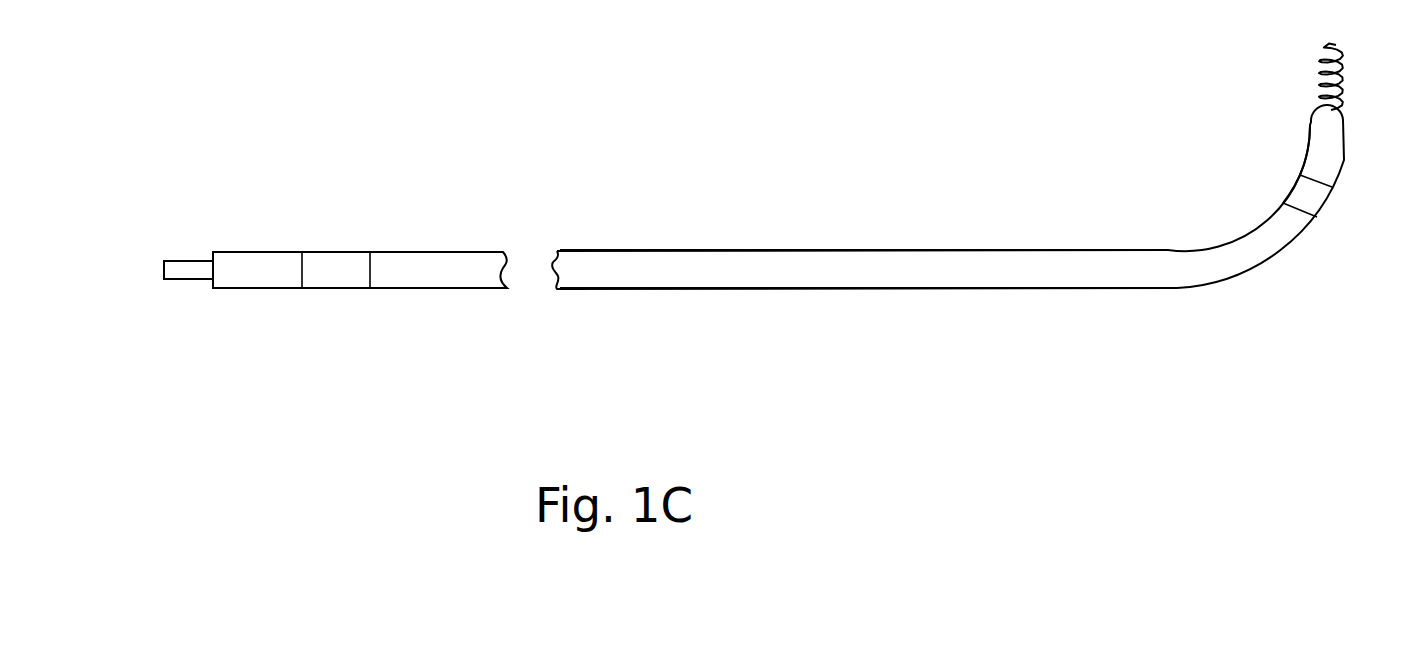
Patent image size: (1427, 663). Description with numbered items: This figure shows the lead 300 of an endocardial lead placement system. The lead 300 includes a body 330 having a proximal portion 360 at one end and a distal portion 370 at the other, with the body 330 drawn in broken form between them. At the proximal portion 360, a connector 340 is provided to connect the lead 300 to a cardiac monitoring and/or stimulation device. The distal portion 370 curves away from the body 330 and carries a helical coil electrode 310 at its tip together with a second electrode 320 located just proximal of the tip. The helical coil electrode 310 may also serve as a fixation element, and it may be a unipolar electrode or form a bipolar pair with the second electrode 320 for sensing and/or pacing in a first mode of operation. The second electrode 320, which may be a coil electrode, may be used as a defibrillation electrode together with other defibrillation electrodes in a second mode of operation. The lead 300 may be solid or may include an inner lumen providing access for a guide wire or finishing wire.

The lead 300 is at (400, 157).
The helical coil electrode 310 is at (1338, 83).
The second electrode 320 is at (1320, 210).
The body 330 is at (817, 278).
The connector 340 is at (192, 272).
The proximal portion 360 is at (235, 210).
The distal portion 370 is at (1225, 168).